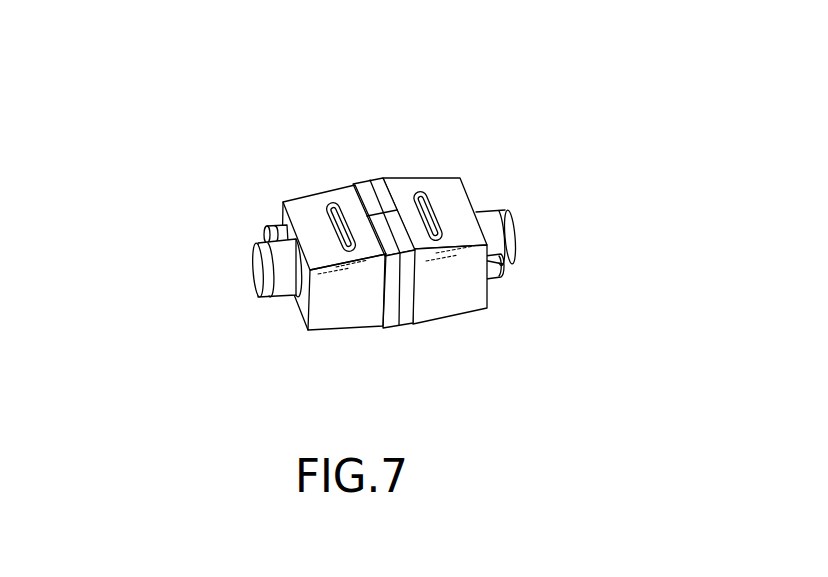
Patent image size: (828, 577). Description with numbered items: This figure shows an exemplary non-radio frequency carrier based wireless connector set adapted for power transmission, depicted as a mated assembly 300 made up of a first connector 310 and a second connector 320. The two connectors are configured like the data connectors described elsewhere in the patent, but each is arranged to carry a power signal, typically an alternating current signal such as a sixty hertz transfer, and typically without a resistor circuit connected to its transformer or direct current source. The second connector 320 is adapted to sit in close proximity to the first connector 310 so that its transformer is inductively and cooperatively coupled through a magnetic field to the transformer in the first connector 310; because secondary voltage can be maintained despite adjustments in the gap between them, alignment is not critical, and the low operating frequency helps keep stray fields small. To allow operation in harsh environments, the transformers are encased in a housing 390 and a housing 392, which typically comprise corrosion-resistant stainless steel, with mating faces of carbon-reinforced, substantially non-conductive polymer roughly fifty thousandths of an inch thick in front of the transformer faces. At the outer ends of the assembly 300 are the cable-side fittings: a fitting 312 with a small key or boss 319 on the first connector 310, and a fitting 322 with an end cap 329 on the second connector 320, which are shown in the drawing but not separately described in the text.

The hub assembly 300 is at (300, 124).
The first connector 310 is at (278, 348).
The first connector 312 is at (253, 270).
The connector key / boss 319 is at (264, 235).
The second connector 320 is at (476, 328).
The second connector 322 is at (508, 270).
The connector end cap 329 is at (516, 233).
The housing 390 is at (362, 288).
The housing 392 is at (447, 192).